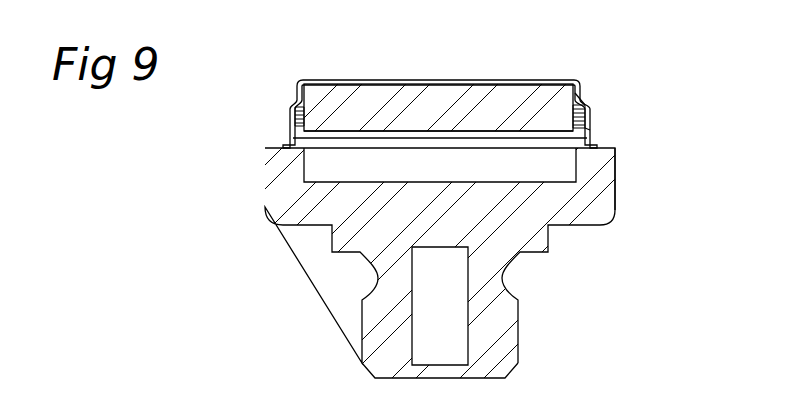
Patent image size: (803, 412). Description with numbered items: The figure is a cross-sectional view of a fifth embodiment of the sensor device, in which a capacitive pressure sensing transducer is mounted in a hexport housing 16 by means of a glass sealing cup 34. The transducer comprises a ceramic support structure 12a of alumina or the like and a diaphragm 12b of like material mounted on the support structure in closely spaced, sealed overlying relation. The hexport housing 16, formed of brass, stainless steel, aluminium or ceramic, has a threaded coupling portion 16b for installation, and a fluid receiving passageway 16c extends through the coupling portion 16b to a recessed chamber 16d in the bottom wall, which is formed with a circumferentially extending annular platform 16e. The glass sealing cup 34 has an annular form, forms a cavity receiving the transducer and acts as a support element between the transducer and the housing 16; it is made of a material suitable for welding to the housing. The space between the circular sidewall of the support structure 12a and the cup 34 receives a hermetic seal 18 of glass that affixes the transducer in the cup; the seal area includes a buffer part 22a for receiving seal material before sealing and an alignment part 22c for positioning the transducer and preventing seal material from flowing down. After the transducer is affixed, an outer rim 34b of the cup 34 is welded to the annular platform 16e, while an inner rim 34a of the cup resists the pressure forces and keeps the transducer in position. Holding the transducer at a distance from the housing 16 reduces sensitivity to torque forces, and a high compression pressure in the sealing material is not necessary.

The support structure 12a is at (502, 106).
The diaphragm 12b is at (448, 138).
The hexport housing 16 is at (615, 228).
The threaded coupling portion 16b is at (518, 347).
The fluid receiving passageway 16c is at (455, 295).
The recessed chamber 16d is at (530, 163).
The annular platform 16e is at (616, 171).
The hermetic seal 18 is at (594, 120).
The buffer part 22a is at (592, 128).
The alignment part 22c is at (585, 92).
The glass sealing cup 34 is at (590, 110).
The cap top wall 34a is at (577, 82).
The outer rim 34b is at (597, 147).